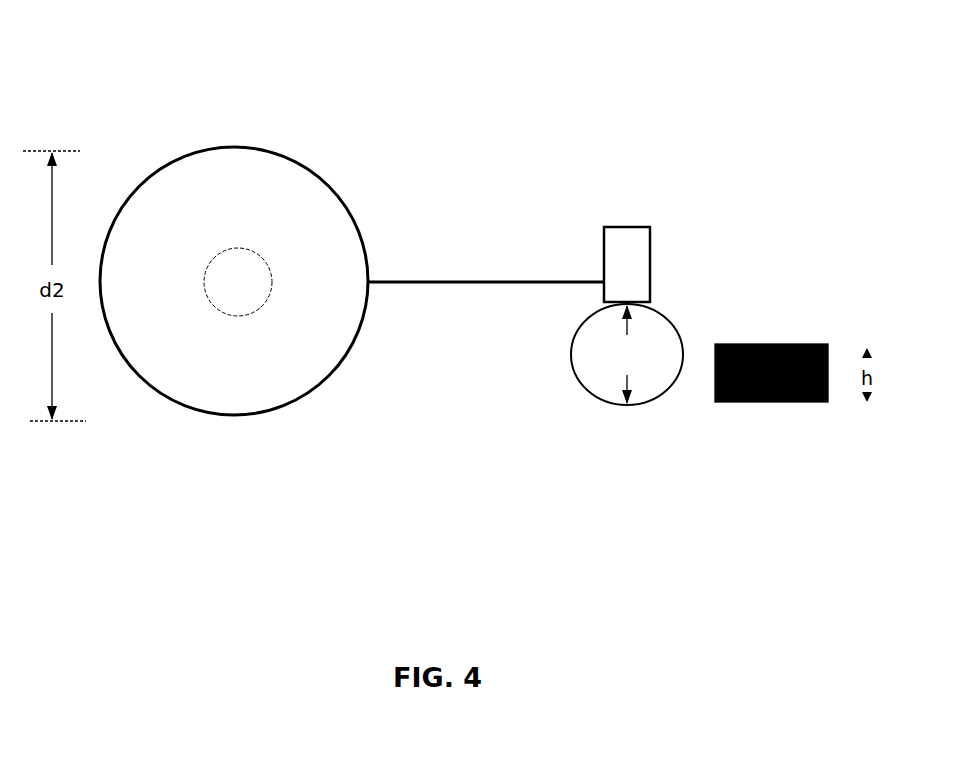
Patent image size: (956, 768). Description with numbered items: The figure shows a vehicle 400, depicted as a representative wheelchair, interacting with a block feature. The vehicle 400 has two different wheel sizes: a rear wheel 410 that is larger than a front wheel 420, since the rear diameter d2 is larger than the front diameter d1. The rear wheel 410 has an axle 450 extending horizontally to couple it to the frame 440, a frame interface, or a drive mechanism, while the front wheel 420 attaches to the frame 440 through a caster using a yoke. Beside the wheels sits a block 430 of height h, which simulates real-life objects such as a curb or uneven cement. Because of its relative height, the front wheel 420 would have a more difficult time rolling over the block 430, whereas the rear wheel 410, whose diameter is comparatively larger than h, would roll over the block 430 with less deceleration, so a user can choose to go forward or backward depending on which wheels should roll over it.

The vehicle 400 is at (421, 76).
The rear wheel 410 is at (189, 176).
The front wheel 420 is at (574, 348).
The block 430 is at (753, 343).
The frame 440 is at (627, 221).
The axle 450 is at (273, 252).